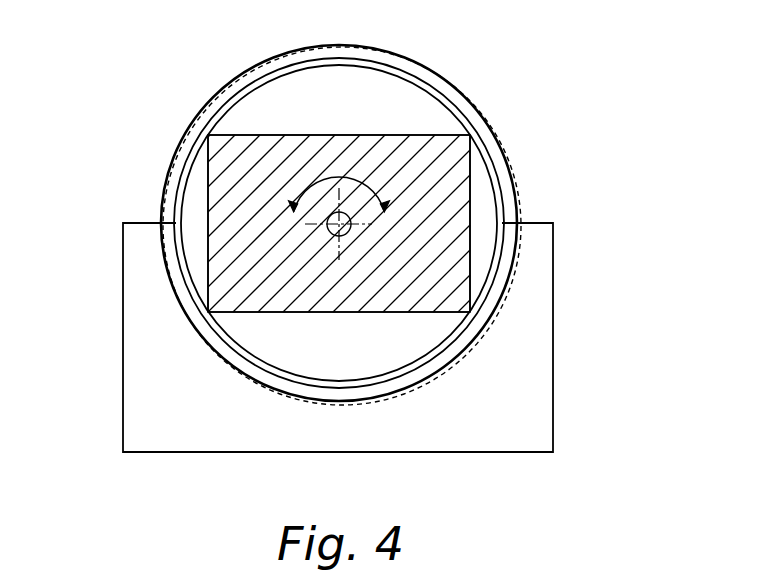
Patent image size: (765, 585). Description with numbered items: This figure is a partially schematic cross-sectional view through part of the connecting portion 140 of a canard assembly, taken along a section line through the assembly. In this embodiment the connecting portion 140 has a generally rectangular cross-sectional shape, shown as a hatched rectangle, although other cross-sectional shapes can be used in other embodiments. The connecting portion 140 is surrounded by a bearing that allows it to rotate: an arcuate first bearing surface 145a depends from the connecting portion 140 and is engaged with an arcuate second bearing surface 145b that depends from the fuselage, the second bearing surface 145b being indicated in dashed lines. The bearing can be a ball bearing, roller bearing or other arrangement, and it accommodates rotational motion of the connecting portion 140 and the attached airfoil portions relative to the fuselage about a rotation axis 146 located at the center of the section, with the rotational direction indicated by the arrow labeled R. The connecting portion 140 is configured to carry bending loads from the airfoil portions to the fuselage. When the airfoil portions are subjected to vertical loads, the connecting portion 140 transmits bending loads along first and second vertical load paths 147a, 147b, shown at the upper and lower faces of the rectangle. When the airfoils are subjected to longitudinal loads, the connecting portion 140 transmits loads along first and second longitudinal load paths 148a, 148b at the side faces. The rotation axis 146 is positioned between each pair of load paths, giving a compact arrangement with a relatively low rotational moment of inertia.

The connecting portion 140 is at (453, 206).
The arcuate first bearing surface 145a is at (260, 62).
The arcuate second bearing surface 145b is at (173, 290).
The rotation axis 146 is at (343, 237).
The first vertical load path 147a is at (388, 135).
The second vertical load path 147b is at (368, 313).
The first longitudinal load path 148a is at (470, 177).
The second longitudinal load path 148b is at (208, 190).
The rotation direction R is at (335, 178).